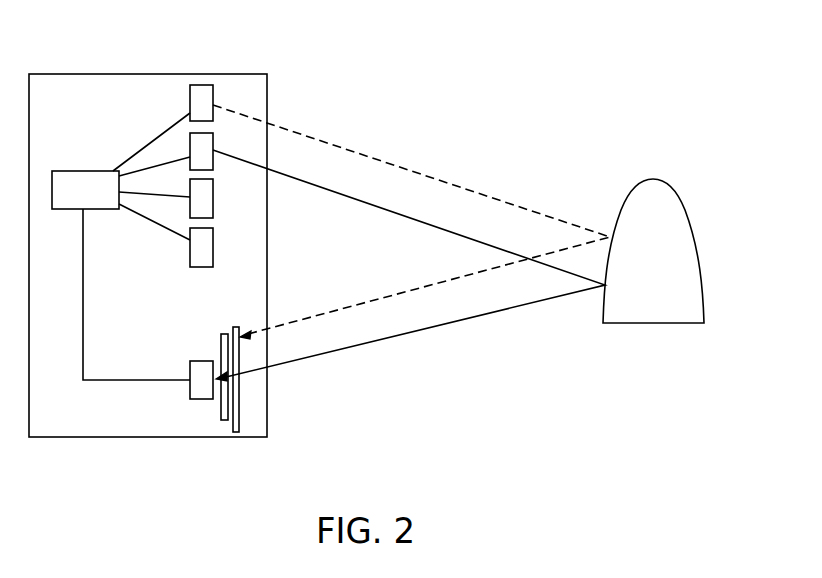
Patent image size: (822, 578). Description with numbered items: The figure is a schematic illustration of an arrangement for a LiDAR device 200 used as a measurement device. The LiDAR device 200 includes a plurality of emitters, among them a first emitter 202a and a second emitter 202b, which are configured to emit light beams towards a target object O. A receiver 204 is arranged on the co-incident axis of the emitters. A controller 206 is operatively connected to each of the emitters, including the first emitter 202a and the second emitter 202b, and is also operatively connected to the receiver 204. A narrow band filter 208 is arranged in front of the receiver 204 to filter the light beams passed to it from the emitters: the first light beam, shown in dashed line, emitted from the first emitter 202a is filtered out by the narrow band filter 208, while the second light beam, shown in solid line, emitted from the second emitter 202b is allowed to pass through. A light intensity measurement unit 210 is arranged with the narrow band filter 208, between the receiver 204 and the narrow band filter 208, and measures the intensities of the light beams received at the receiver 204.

The LiDAR device 200 is at (267, 74).
The first emitter 202a is at (210, 84).
The second emitter 202b is at (214, 150).
The receiver 204 is at (193, 399).
The controller 206 is at (71, 171).
The narrow band filter 208 is at (238, 432).
The light intensity measurement unit 210 is at (225, 420).
The target object O is at (693, 246).